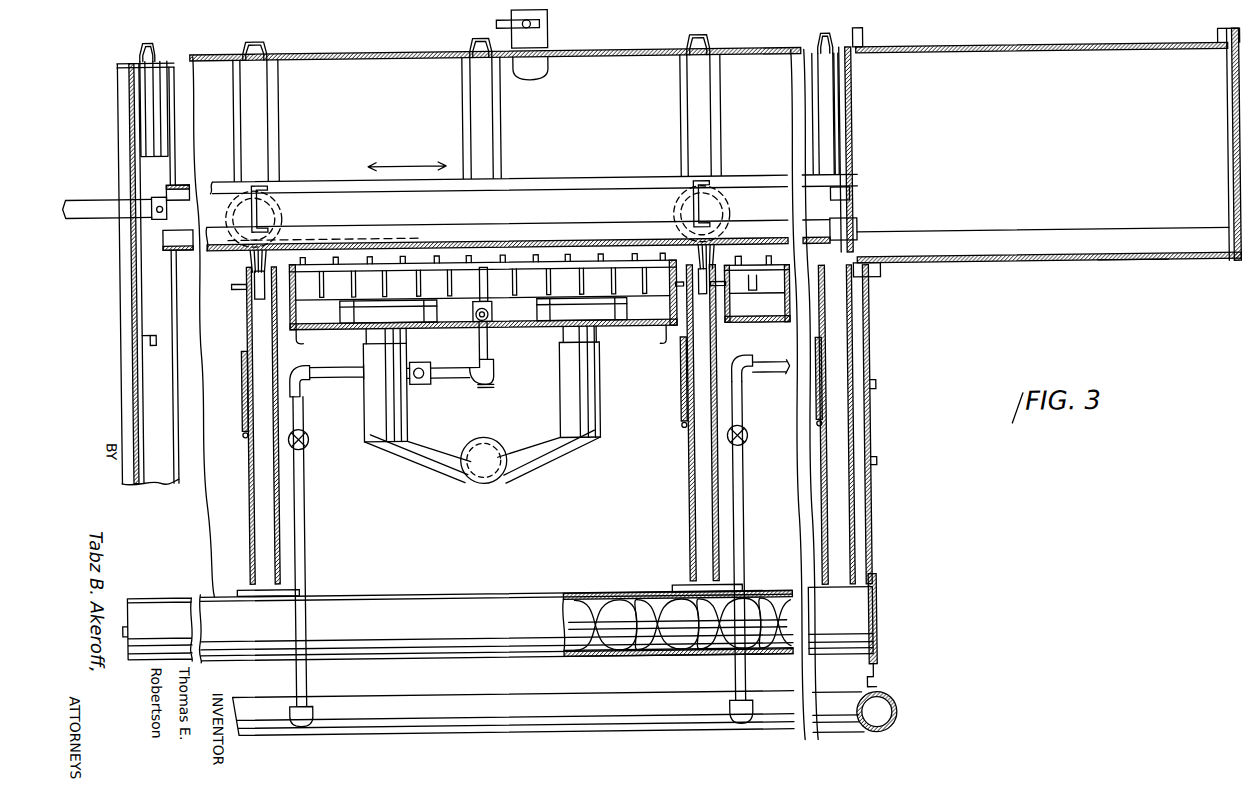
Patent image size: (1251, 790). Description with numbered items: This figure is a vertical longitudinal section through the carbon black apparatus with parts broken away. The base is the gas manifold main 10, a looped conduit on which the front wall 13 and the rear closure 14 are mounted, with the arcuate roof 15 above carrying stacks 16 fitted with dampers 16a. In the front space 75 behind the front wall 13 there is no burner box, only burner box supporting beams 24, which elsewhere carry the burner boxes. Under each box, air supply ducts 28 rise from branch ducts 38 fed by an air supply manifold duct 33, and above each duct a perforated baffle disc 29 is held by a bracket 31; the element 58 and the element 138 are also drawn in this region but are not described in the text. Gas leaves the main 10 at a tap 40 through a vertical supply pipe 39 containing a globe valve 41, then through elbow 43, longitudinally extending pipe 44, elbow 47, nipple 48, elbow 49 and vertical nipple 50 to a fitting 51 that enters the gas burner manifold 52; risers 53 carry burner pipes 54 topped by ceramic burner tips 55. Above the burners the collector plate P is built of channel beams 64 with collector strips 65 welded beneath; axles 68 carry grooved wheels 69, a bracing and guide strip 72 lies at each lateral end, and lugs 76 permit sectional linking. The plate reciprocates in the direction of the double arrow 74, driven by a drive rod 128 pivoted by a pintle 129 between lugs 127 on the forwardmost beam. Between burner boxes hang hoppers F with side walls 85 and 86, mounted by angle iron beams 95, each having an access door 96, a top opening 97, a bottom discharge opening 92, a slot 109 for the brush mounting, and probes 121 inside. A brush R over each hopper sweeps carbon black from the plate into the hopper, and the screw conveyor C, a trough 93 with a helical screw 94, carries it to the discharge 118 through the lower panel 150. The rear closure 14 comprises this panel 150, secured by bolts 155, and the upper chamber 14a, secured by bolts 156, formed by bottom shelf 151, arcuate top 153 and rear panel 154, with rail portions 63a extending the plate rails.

The gas manifold main 10 is at (353, 731).
The front wall 13 is at (127, 259).
The rear closure 14 is at (953, 275).
The upper chamber 14a is at (1048, 163).
The roof 15 is at (652, 50).
The stack 16 is at (537, 46).
The damper 16a is at (553, 13).
The burner box supporting beam 24 is at (151, 330).
The air supply duct 28 is at (403, 343).
The baffle disc 29 is at (364, 306).
The bracket 31 is at (474, 312).
The air supply manifold duct 33 is at (495, 482).
The branch duct 38 is at (597, 416).
The vertical supply pipe 39 is at (306, 522).
The tap 40 is at (312, 710).
The globe valve 41 is at (308, 448).
The elbow 43 is at (303, 394).
The longitudinally extending pipe 44 is at (326, 375).
The elbow 47 is at (425, 383).
The nipple 48 is at (460, 378).
The elbow 49 is at (492, 384).
The vertical nipple 50 is at (494, 361).
The fitting 51 is at (491, 333).
The gas burner manifold 52 is at (490, 314).
The riser 53 is at (481, 285).
The burner pipe 54 is at (507, 240).
The burner tip 55 is at (436, 254).
The ribs 58 is at (482, 282).
The rail portion 63a is at (1040, 252).
The channel beam 64 is at (243, 283).
The collector strip 65 is at (370, 232).
The axle 68 is at (262, 205).
The grooved wheel 69 is at (222, 167).
The bracing and guide strip 72 is at (509, 177).
The double arrow 74 is at (403, 163).
The front space 75 is at (157, 366).
The lug 76 is at (851, 191).
The hopper side wall 85 is at (248, 478).
The hopper side wall 86 is at (278, 563).
The discharge opening 92 is at (705, 585).
The trough 93 is at (650, 657).
The helical screw 94 is at (592, 631).
The angle iron beam 95 is at (247, 300).
The access door 96 is at (242, 386).
The top opening 97 is at (712, 256).
The slot 109 is at (712, 298).
The discharge 118 is at (876, 593).
The probe 121 is at (644, 230).
The lug 127 is at (160, 192).
The drive rod 128 is at (77, 194).
The pintle 129 is at (154, 214).
The block 138 is at (127, 634).
The lower panel 150 is at (876, 391).
The bottom shelf 151 is at (1128, 268).
The arcuate top 153 is at (1114, 50).
The rear panel 154 is at (1233, 137).
The bolt 155 is at (876, 463).
The bolt 156 is at (870, 41).
The screw conveyor C is at (481, 600).
The hopper F is at (256, 388).
The collector plate P is at (583, 217).
The brush R is at (751, 205).